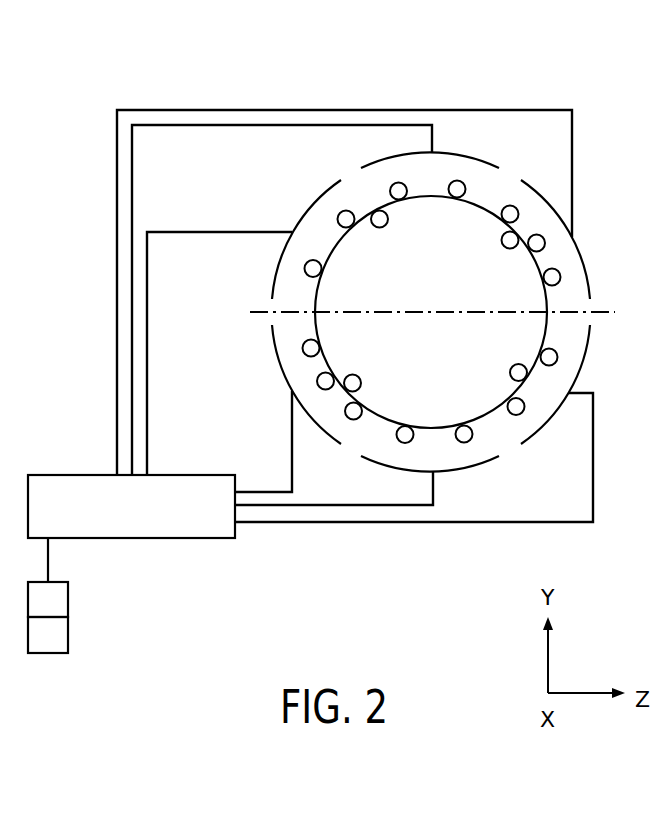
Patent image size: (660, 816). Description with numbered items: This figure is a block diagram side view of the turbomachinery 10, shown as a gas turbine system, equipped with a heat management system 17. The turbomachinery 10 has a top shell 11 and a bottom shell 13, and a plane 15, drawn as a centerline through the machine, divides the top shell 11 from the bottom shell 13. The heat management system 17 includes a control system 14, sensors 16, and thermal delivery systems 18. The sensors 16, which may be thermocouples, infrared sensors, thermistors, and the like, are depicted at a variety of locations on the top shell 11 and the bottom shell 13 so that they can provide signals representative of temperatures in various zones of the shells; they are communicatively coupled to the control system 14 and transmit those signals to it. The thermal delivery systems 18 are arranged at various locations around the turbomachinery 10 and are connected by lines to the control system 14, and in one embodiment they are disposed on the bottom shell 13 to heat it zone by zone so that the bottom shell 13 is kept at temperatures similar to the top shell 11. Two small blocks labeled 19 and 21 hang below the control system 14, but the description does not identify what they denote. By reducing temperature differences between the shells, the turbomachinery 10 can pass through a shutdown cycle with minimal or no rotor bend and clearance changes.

The turbomachinery 10 is at (118, 66).
The top shell 11 is at (442, 314).
The bottom shell 13 is at (488, 417).
The control system 14 is at (130, 540).
The plane 15 is at (600, 310).
The sensors 16 is at (385, 228).
The heat management system 17 is at (74, 446).
The thermal delivery systems 18 is at (387, 157).
The processor 19 is at (68, 600).
The memory 21 is at (68, 637).